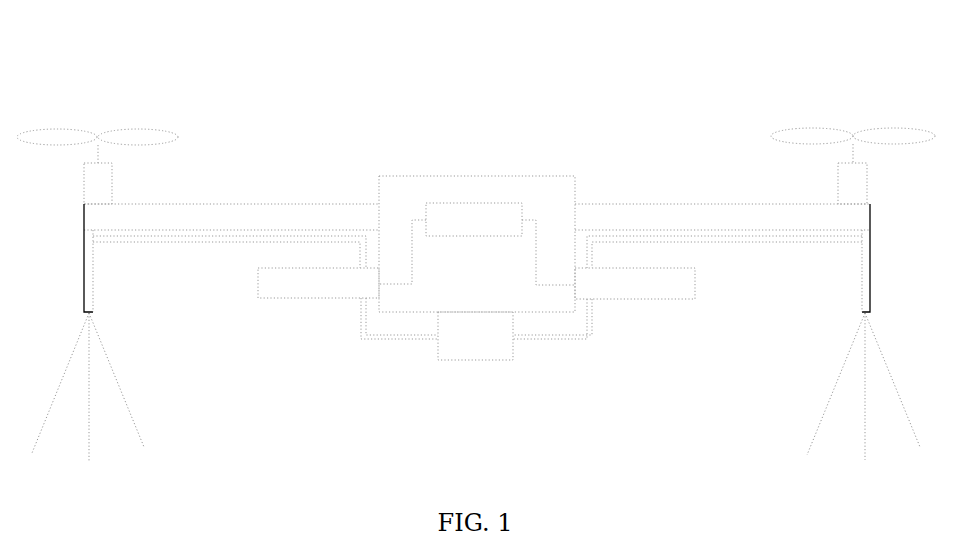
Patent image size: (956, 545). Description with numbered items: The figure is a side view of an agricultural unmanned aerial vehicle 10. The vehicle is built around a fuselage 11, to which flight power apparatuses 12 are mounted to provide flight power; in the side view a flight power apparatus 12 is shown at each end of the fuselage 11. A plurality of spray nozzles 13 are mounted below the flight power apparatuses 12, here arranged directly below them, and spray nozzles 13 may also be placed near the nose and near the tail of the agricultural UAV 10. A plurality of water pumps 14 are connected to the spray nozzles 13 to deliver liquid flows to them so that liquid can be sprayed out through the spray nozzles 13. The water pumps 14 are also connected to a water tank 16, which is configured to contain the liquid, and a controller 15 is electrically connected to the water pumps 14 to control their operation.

The agricultural unmanned aerial vehicle 10 is at (452, 80).
The fuselage 11 is at (641, 220).
The flight power apparatus 12 is at (102, 177).
The spray nozzle 13 is at (93, 285).
The water pump 14 is at (608, 300).
The controller 15 is at (480, 203).
The water tank 16 is at (478, 360).